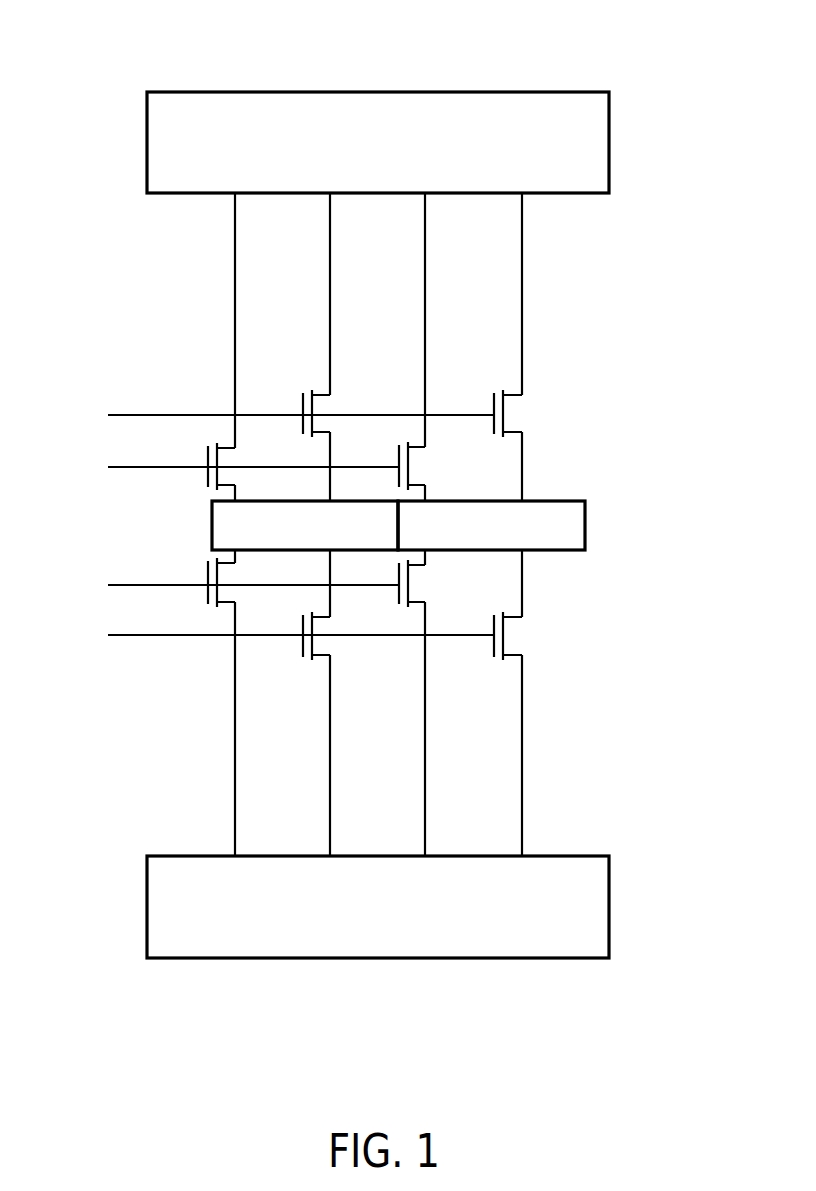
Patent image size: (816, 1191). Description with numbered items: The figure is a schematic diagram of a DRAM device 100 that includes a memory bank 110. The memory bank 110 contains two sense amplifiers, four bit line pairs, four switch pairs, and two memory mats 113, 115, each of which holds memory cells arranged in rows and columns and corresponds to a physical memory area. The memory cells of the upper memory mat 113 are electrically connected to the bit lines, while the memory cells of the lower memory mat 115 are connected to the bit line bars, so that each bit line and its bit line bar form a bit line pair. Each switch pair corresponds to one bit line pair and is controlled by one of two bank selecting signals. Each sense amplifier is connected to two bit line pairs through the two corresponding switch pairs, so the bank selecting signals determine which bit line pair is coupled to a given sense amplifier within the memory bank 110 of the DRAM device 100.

The DRAM device 100 is at (693, 1020).
The memory bank 110 is at (66, 65).
The memory mat 113 is at (609, 141).
The memory mat 115 is at (609, 907).